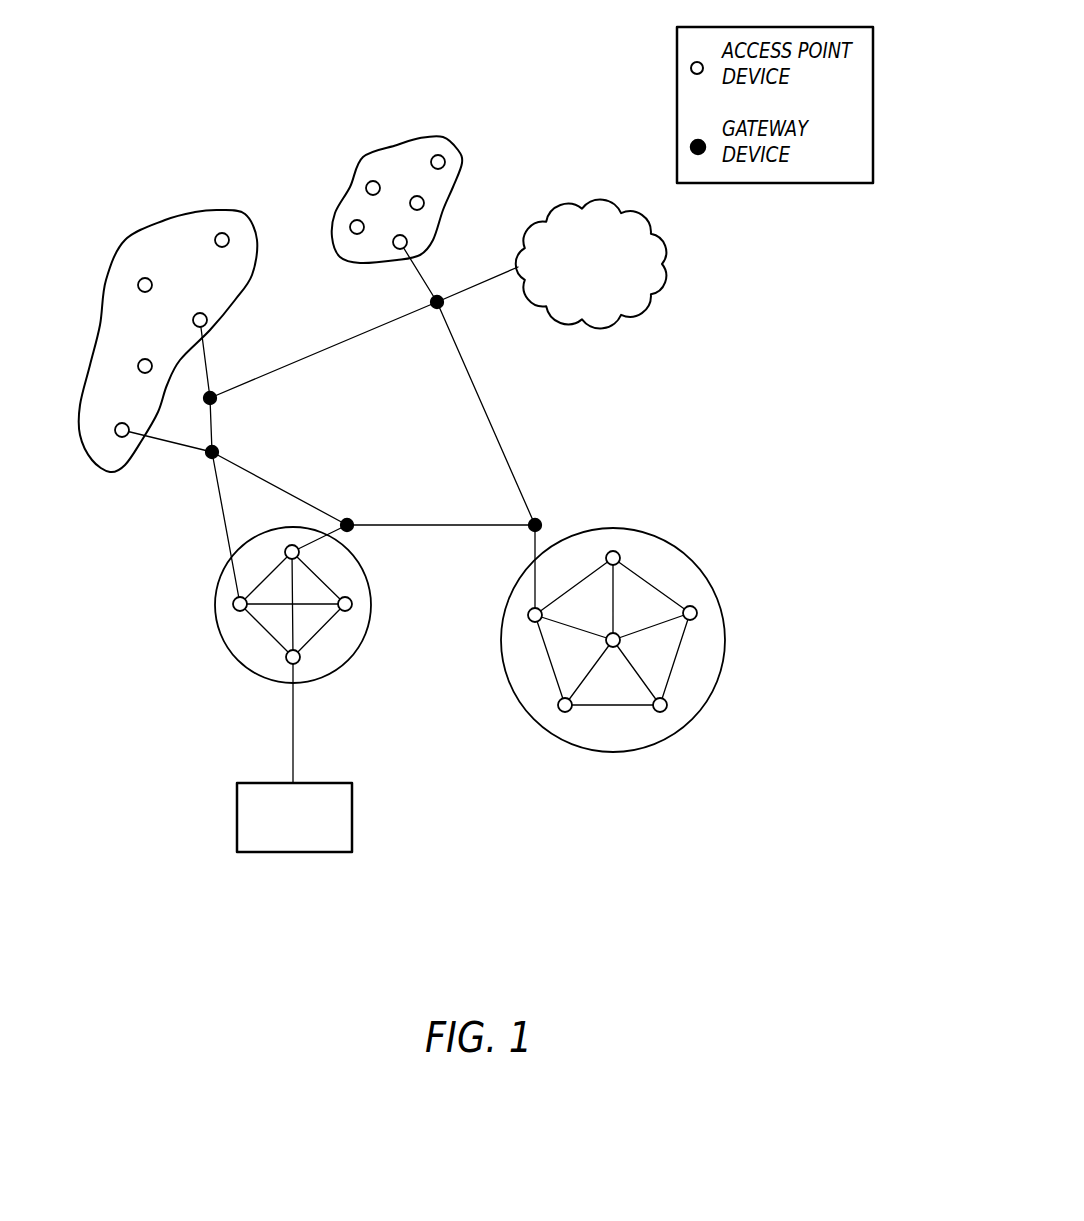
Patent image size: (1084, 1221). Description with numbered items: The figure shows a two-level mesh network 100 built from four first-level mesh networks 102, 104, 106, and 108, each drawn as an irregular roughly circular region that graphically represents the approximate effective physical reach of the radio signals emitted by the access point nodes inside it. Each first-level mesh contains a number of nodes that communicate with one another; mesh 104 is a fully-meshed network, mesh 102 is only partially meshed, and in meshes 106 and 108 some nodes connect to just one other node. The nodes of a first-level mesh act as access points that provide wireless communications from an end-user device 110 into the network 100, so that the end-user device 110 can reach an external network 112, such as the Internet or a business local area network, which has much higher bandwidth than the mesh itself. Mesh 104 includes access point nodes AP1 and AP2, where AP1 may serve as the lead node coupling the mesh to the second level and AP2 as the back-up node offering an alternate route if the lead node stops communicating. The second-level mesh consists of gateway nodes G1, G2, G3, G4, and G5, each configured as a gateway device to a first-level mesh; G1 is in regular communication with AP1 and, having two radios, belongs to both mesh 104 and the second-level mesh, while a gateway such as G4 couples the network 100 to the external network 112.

The two-level mesh network 100 is at (753, 517).
The first-level mesh network 102 is at (728, 637).
The first-level mesh network 104 is at (372, 603).
The first-level mesh network 106 is at (118, 472).
The first-level mesh network 108 is at (420, 142).
The end-user device 110 is at (353, 815).
The external network 112 is at (603, 327).
The gateway node G1 is at (350, 520).
The gateway node G2 is at (542, 522).
The gateway node G3 is at (214, 400).
The gateway node G4 is at (443, 302).
The gateway node G5 is at (207, 458).
The access point node AP1 is at (290, 543).
The access point node AP2 is at (233, 604).